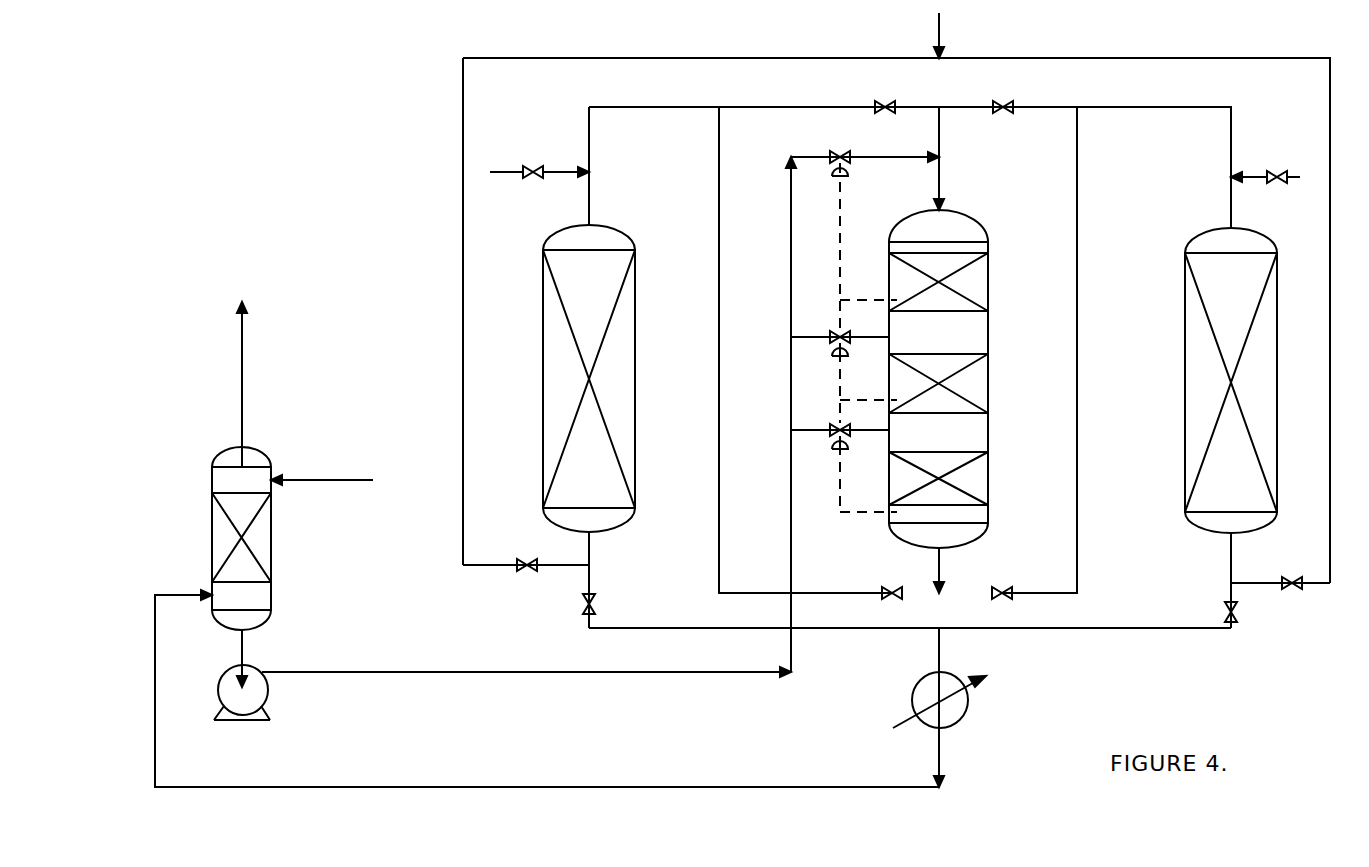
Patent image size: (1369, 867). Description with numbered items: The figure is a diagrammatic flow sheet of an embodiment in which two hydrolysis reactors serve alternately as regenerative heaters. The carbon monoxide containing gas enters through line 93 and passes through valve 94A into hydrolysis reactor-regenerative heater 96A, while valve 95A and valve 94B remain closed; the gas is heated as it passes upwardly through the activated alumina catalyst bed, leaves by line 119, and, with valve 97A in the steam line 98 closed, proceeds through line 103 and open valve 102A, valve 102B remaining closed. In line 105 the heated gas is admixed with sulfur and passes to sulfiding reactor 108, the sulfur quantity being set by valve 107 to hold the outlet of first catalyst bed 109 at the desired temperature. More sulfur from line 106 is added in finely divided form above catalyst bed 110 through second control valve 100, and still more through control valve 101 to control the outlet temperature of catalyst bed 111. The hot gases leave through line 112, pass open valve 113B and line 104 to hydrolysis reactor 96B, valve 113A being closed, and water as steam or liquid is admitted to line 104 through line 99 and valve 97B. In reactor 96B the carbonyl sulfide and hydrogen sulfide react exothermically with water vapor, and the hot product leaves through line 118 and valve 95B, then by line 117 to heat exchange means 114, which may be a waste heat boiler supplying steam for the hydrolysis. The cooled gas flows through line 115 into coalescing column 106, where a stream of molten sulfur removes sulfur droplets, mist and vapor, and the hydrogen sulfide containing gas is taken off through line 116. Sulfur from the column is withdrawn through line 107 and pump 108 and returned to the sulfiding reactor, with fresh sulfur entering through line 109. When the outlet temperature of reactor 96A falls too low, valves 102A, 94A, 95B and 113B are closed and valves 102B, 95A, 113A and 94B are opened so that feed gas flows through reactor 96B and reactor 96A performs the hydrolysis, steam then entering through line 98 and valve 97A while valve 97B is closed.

The line 93 is at (946, 18).
The valve 94A is at (527, 572).
The valve 94B is at (1292, 590).
The valve 95A is at (595, 604).
The valve 95B is at (1225, 612).
The hydrolysis reactor-regenerative heater 96A is at (543, 405).
The hydrolysis reactor 96B is at (1185, 370).
The valve 97A is at (535, 166).
The valve 97B is at (1279, 170).
The line 98 is at (492, 172).
The line 99 is at (1298, 178).
The second control valve 100 is at (838, 332).
The control valve 101 is at (838, 425).
The valve 102A is at (883, 103).
The valve 102B is at (1008, 104).
The line 103 is at (715, 87).
The line 104 is at (1163, 107).
The line 105 is at (947, 107).
The coalescing column 106 is at (791, 272).
The valve 107 is at (846, 151).
The sulfiding reactor 108 is at (985, 224).
The first catalyst bed 109 is at (988, 292).
The catalyst bed 110 is at (988, 380).
The catalyst bed 111 is at (988, 476).
The line 112 is at (940, 560).
The valve 113A is at (893, 588).
The valve 113B is at (1003, 588).
The heat exchange means 114 is at (964, 718).
The line 115 is at (630, 787).
The line 116 is at (244, 318).
The line 117 is at (837, 630).
The line 118 is at (1231, 548).
The line 119 is at (589, 548).